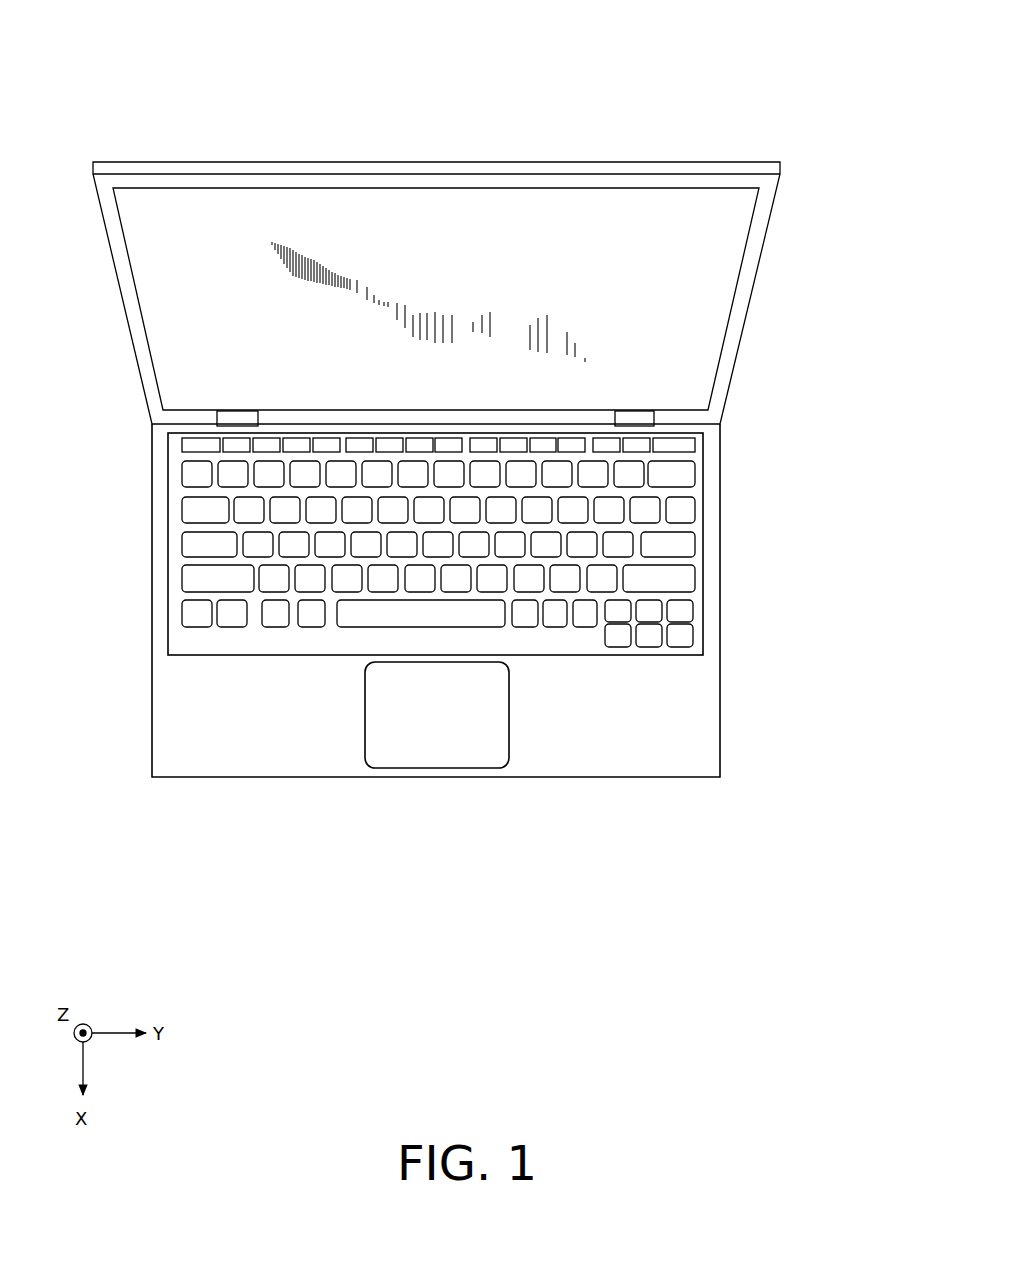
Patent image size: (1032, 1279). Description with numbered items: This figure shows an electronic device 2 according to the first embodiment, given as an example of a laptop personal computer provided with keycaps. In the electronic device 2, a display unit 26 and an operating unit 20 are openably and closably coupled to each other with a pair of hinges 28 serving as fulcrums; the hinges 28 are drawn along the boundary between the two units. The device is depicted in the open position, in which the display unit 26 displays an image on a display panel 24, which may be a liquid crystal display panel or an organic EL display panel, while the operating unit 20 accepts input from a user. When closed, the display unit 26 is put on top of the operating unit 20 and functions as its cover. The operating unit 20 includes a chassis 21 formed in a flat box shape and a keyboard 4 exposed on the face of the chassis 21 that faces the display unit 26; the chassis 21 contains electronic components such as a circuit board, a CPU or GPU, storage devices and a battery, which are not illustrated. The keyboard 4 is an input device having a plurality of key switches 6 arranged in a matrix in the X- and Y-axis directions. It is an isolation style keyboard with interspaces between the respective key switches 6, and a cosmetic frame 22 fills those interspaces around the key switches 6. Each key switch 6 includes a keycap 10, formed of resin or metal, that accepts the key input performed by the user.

The electronic device 2 is at (874, 30).
The keyboard 4 is at (379, 638).
The key switch 6 is at (275, 592).
The keycap 10 is at (349, 579).
The operating unit 20 is at (735, 589).
The chassis 21 is at (190, 718).
The cosmetic frame 22 is at (183, 637).
The display panel 24 is at (717, 287).
The display unit 26 is at (776, 214).
The hinge 28 is at (236, 416).